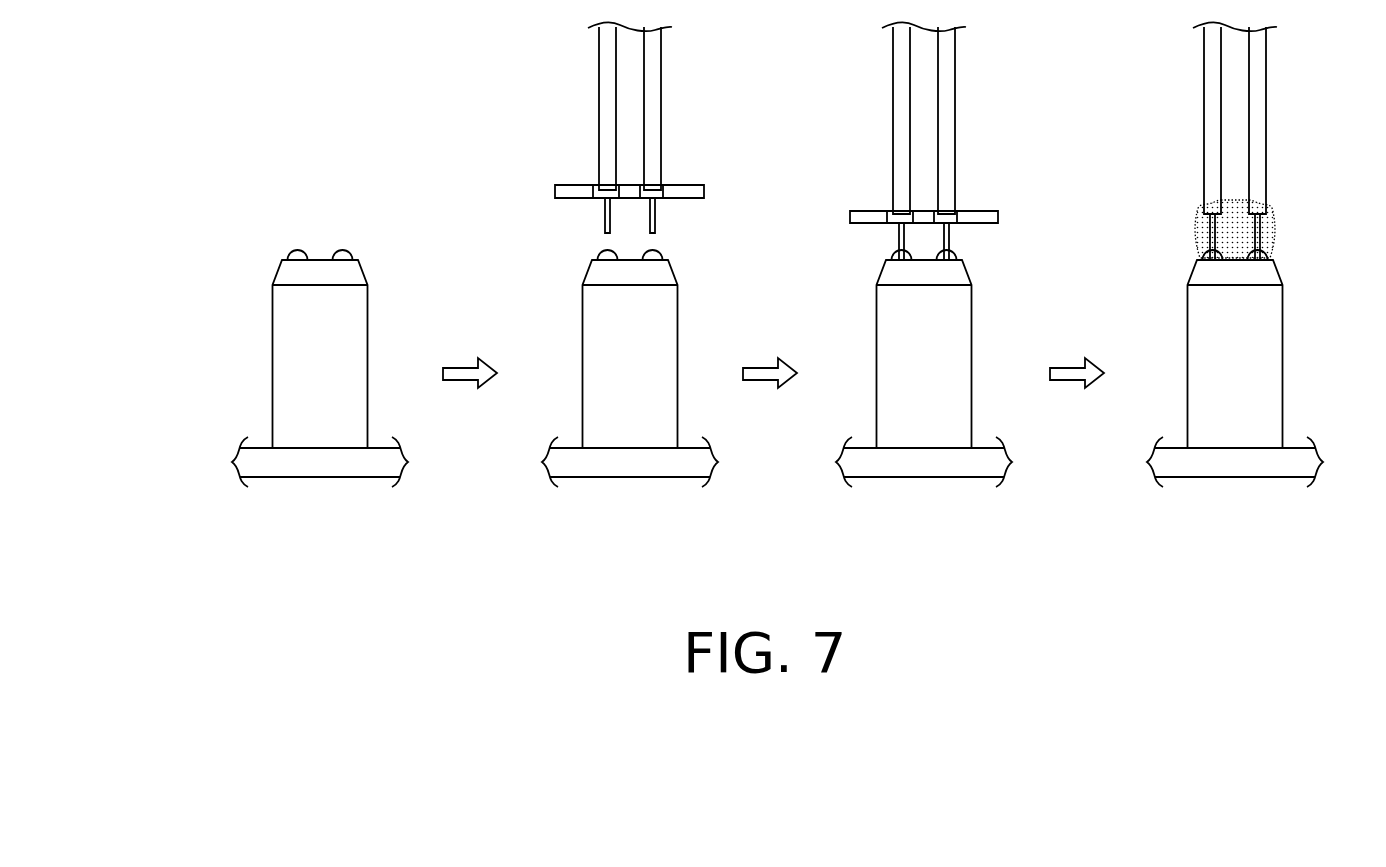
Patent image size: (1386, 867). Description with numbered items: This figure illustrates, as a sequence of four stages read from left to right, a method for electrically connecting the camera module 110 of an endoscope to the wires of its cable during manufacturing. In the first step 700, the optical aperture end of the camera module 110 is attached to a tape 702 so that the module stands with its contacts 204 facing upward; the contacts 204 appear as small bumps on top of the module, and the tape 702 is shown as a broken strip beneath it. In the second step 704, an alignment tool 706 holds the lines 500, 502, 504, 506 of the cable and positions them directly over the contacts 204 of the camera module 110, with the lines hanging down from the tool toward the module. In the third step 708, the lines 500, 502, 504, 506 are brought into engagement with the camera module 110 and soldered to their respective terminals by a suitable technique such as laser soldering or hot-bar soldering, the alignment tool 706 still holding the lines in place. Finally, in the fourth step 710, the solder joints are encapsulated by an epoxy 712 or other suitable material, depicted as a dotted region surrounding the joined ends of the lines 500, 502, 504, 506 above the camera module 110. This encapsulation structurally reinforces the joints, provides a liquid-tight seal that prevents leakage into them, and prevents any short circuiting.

The first step 700 is at (216, 283).
The contacts 204 is at (283, 253).
The camera module 110 is at (288, 348).
The tape 702 is at (318, 458).
The second step 704 is at (520, 283).
The line 500 is at (538, 106).
The line 502 is at (607, 108).
The line 504 is at (652, 108).
The line 506 is at (630, 26).
The alignment tool 706 is at (573, 193).
The third step 708 is at (826, 283).
The fourth step 710 is at (1143, 283).
The epoxy 712 is at (1268, 230).